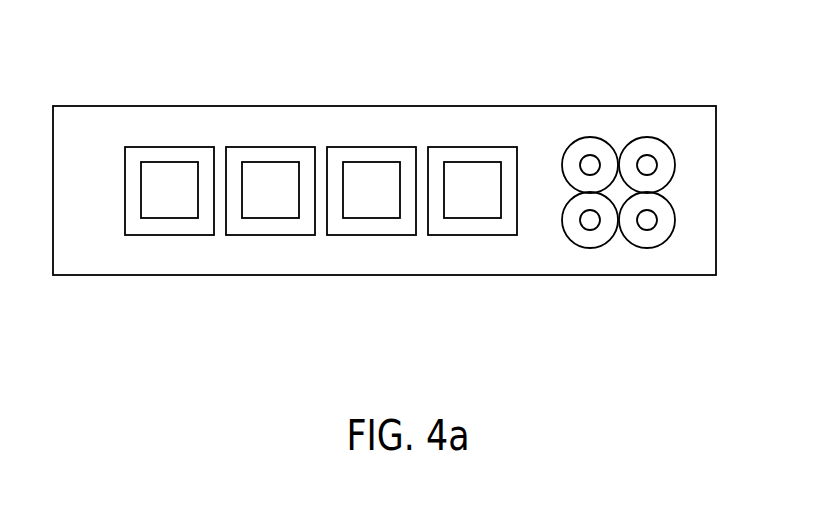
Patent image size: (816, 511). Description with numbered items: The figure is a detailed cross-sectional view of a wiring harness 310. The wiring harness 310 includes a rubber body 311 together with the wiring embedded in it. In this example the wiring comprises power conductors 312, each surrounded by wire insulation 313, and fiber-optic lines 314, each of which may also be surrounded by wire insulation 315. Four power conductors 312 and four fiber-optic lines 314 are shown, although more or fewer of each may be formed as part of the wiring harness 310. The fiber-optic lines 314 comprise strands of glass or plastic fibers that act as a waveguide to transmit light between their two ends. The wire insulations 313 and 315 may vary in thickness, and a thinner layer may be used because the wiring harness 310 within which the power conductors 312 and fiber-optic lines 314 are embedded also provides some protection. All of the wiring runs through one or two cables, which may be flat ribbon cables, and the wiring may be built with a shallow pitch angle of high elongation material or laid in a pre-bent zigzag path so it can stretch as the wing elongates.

The wiring harness 310 is at (565, 78).
The rubber body 311 is at (697, 264).
The power conductor 312 is at (166, 167).
The wire insulation 313 is at (168, 236).
The fiber-optic line 314 is at (646, 157).
The wire insulation 315 is at (566, 222).